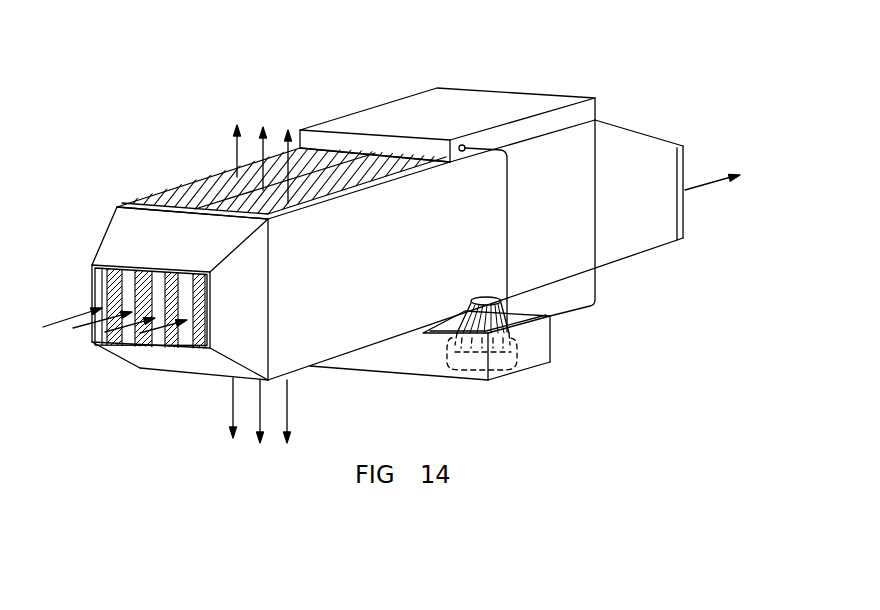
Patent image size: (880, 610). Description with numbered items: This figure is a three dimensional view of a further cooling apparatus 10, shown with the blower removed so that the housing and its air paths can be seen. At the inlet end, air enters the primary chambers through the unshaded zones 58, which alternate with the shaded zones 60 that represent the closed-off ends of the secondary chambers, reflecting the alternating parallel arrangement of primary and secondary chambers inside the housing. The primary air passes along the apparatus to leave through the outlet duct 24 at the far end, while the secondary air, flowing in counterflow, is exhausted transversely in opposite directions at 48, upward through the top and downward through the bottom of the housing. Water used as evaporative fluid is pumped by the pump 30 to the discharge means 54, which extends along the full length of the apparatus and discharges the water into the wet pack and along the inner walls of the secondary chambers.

The air treatment unit 10 is at (591, 35).
The outlet duct 24 is at (682, 212).
The pump 30 is at (483, 298).
The secondary air exhaust 48 is at (262, 152).
The discharge means 54 is at (440, 110).
The unshaded zones 58 is at (128, 280).
The shaded zones 60 is at (170, 288).